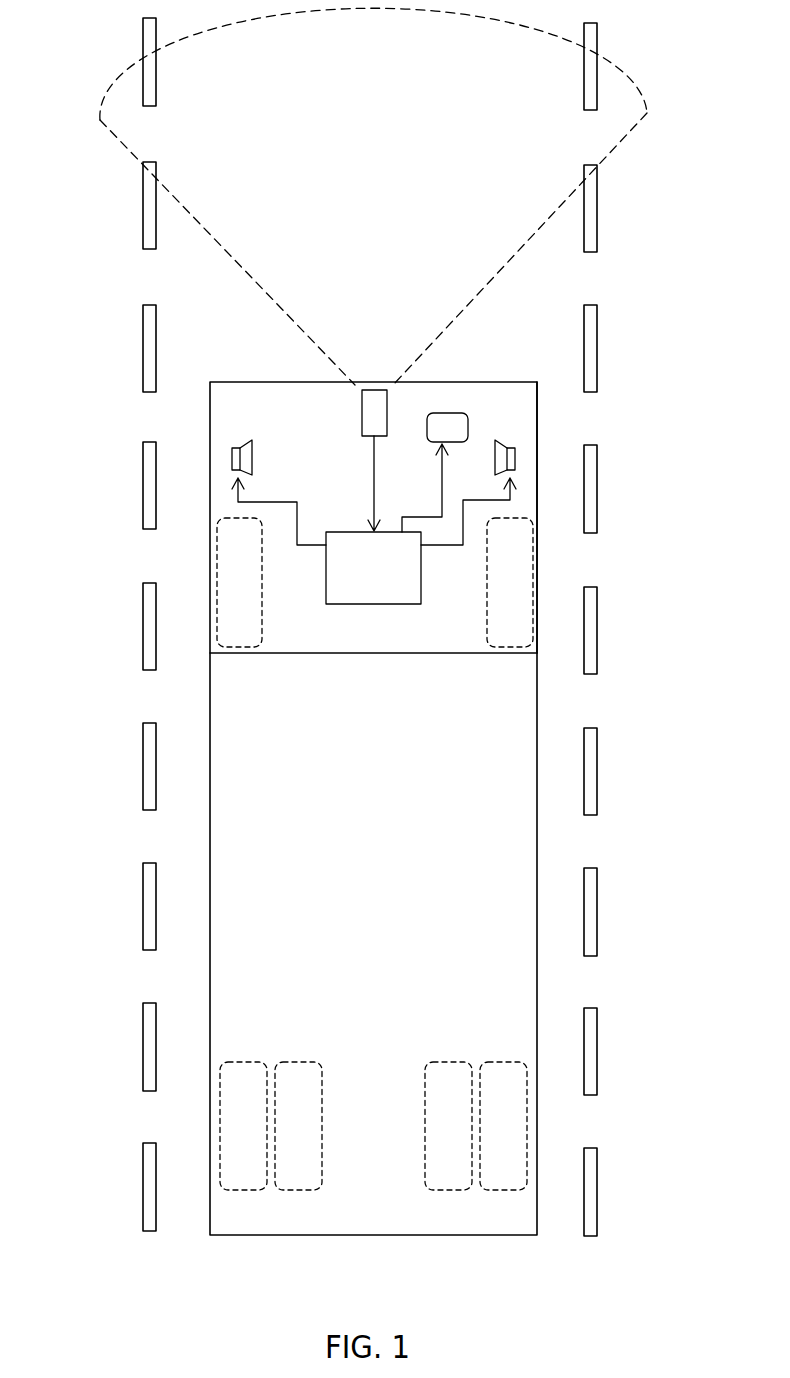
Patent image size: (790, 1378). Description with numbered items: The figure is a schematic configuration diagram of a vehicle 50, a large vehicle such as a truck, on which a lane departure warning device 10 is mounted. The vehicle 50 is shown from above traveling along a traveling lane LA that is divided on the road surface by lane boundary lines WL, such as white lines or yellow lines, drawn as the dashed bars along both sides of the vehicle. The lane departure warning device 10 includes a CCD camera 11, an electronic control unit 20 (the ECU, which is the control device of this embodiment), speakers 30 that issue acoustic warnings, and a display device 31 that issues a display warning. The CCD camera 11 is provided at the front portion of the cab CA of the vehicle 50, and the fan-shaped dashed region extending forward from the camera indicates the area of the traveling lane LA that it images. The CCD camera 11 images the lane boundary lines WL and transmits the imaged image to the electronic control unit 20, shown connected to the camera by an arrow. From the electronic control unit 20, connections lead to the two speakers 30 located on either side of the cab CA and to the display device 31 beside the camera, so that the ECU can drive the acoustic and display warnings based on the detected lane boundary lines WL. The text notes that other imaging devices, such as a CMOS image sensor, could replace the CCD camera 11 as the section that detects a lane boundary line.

The lane departure warning device 10 is at (369, 501).
The CCD camera 11 is at (362, 414).
The electronic control unit 20 is at (378, 606).
The speakers 30 is at (232, 447).
The display device 31 is at (448, 413).
The vehicle 50 is at (389, 860).
The lane boundary lines WL is at (143, 40).
The traveling lane LA is at (384, 118).
The cab CA is at (537, 509).